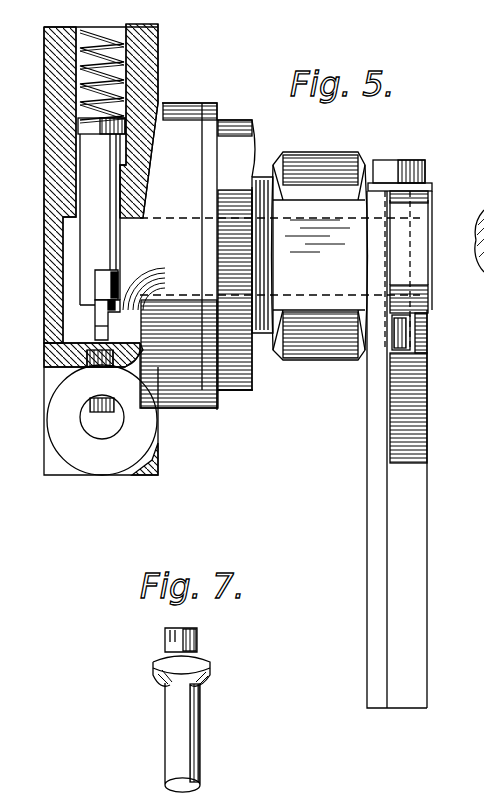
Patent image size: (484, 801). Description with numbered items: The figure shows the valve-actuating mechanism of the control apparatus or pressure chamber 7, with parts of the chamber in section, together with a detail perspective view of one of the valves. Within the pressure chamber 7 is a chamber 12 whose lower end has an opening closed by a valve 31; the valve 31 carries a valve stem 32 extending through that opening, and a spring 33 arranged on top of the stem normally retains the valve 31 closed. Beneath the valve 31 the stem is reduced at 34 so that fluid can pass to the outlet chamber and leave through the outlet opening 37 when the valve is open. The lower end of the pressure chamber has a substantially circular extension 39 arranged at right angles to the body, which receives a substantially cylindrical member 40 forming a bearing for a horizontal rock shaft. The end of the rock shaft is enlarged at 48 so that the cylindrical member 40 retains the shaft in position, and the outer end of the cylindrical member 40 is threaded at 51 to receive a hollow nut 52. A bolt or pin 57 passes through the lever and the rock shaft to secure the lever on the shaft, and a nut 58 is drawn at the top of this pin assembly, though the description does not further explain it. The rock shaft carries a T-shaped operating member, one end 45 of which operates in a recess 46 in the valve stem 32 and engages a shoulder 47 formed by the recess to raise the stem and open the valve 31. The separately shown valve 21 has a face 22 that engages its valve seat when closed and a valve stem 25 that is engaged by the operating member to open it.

In FIG. 5, the pressure chamber 7 is at (160, 90).
In FIG. 5, the chamber 12 is at (125, 50).
In FIG. 5, the spring 33 is at (122, 72).
In FIG. 5, the valve stem 32 is at (100, 219).
In FIG. 5, the shoulder 47 is at (97, 275).
In FIG. 5, the enlarged end of rock shaft 48 is at (116, 285).
In FIG. 5, the end of T-shaped member 45 is at (104, 310).
In FIG. 5, the recess 46 is at (95, 328).
In FIG. 5, the valve 31 is at (84, 362).
In FIG. 5, the cylindrical member 40 is at (236, 130).
In FIG. 5, the circular extension 39 is at (187, 410).
In FIG. 5, the threads 51 is at (260, 180).
In FIG. 5, the hollow nut 52 is at (326, 165).
In FIG. 5, the cap nut 58 is at (414, 160).
In FIG. 5, the bolt or pin 57 is at (420, 236).
In FIG. 5, the reduced portion of stem 34 is at (110, 410).
In FIG. 5, the outlet opening 37 is at (100, 432).
In FIG. 7, the valve 21 is at (195, 642).
In FIG. 7, the valve face 22 is at (206, 680).
In FIG. 7, the valve stem 25 is at (200, 744).